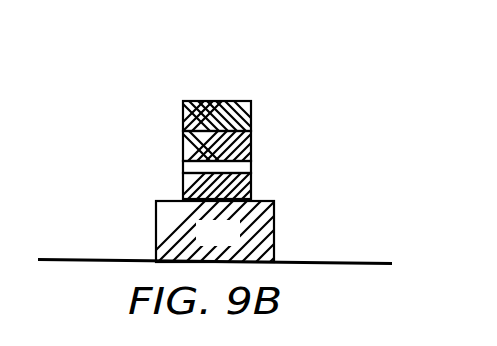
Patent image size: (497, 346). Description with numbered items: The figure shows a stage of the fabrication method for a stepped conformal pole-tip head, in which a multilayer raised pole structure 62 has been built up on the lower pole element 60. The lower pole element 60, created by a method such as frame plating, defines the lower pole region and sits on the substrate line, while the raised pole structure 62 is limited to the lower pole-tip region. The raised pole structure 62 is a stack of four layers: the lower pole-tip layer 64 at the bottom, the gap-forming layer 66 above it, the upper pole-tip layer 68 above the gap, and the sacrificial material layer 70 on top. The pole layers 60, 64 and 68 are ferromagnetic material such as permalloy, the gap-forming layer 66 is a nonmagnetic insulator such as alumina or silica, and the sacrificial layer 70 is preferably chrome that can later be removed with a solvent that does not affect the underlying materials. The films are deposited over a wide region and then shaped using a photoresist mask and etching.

The P1s element 60 is at (274, 225).
The multilayer raised pole structure 62 is at (225, 115).
The lower pole-tip P1t layer 64 is at (183, 192).
The gap-forming layer 66 is at (198, 166).
The upper pole-tip P2t layer 68 is at (183, 138).
The sacrificial material layer 70 is at (183, 112).